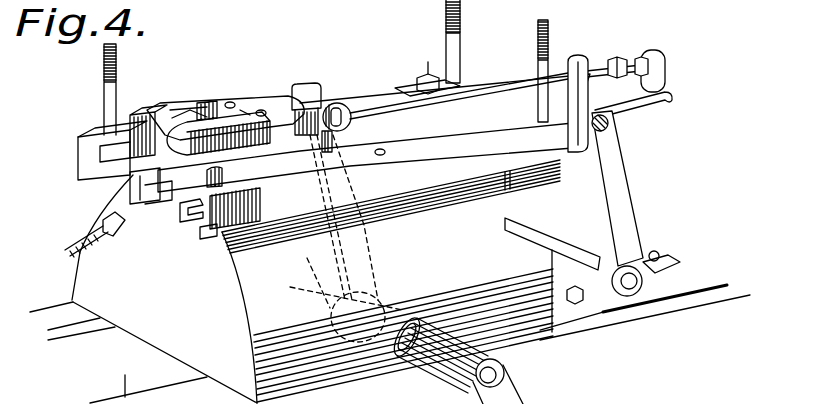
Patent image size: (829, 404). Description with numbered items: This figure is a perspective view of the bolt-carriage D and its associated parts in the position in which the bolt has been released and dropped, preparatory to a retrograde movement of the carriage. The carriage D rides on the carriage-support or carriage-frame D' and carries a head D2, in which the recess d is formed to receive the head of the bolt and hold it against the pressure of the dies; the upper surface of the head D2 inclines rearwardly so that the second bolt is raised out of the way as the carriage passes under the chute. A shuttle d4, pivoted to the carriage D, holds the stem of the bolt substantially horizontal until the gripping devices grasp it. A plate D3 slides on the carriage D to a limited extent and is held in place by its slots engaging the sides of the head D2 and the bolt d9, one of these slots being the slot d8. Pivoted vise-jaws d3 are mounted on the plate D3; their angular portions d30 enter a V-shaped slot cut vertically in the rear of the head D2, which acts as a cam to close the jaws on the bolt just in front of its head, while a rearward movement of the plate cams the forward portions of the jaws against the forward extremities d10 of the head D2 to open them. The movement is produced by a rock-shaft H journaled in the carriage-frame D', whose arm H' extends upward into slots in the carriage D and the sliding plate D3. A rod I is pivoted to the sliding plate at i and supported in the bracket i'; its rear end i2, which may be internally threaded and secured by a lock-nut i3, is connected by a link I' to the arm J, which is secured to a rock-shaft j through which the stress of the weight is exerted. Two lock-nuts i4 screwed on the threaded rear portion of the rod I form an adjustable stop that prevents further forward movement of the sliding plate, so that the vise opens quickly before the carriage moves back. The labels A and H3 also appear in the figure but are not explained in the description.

The base A is at (92, 333).
The bolt-carriage D is at (374, 133).
The carriage-support D' is at (316, 281).
The head D2 is at (185, 84).
The sliding plate D3 is at (293, 150).
The recess d is at (85, 161).
The vise-jaws d3 is at (215, 106).
The shuttle d4 is at (164, 200).
The slot d8 is at (462, 87).
The bolt d9 is at (426, 72).
The forward extremities d10 is at (133, 117).
The angular portions d30 is at (240, 110).
The rock-shaft H is at (438, 335).
The arm H' is at (317, 87).
The handle arm H3 is at (507, 360).
The pivot i is at (342, 107).
The rod I is at (495, 86).
The link I' is at (633, 113).
The bracket i' is at (578, 85).
The rear end of rod i2 is at (655, 50).
The lock-nut i3 is at (640, 57).
The lock-nuts i4 is at (611, 55).
The arm J is at (608, 163).
The rock-shaft j is at (549, 243).